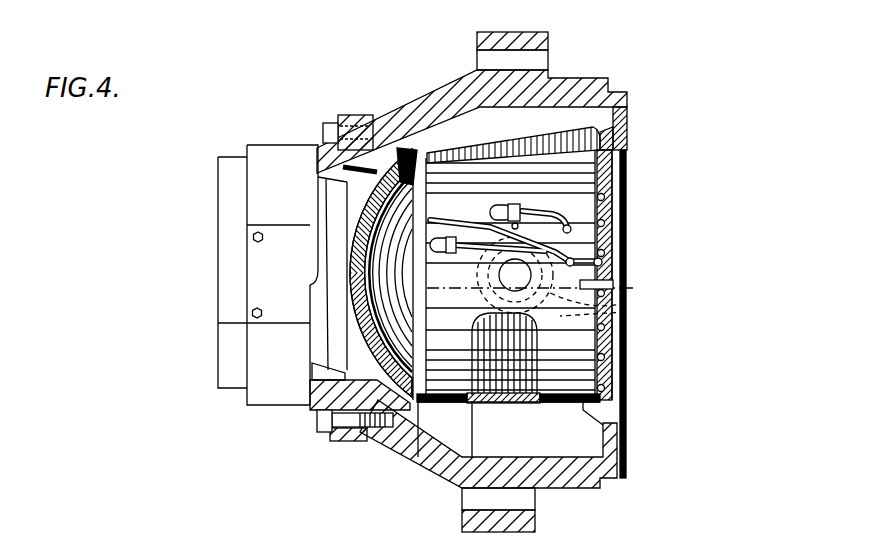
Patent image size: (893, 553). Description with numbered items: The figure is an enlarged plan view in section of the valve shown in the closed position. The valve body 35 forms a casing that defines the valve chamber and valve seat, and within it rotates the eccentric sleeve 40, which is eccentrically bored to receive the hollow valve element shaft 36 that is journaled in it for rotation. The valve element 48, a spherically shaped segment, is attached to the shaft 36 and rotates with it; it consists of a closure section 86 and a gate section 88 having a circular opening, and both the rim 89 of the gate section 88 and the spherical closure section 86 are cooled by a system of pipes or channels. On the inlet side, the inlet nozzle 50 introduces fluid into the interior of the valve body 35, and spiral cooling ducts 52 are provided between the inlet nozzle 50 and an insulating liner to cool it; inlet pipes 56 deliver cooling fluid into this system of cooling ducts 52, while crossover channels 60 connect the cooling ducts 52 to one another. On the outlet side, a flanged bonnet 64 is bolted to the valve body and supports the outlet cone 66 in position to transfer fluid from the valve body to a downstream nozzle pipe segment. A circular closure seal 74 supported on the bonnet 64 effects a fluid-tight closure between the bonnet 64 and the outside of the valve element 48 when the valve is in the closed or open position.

The valve body 35 is at (597, 81).
The gate section 88 is at (553, 130).
The rim 89 is at (623, 122).
The inlet nozzle 50 is at (567, 187).
The inlet pipes 56 is at (562, 256).
The hollow valve element shaft 36 is at (625, 303).
The eccentric sleeve 40 is at (625, 312).
The crossover channels 60 is at (545, 349).
The spiral cooling ducts 52 is at (620, 378).
The outlet cone 66 is at (322, 199).
The flanged bonnet 64 is at (267, 395).
The closure section 86 is at (363, 215).
The valve element 48 is at (363, 337).
The circular closure seal 74 is at (393, 437).